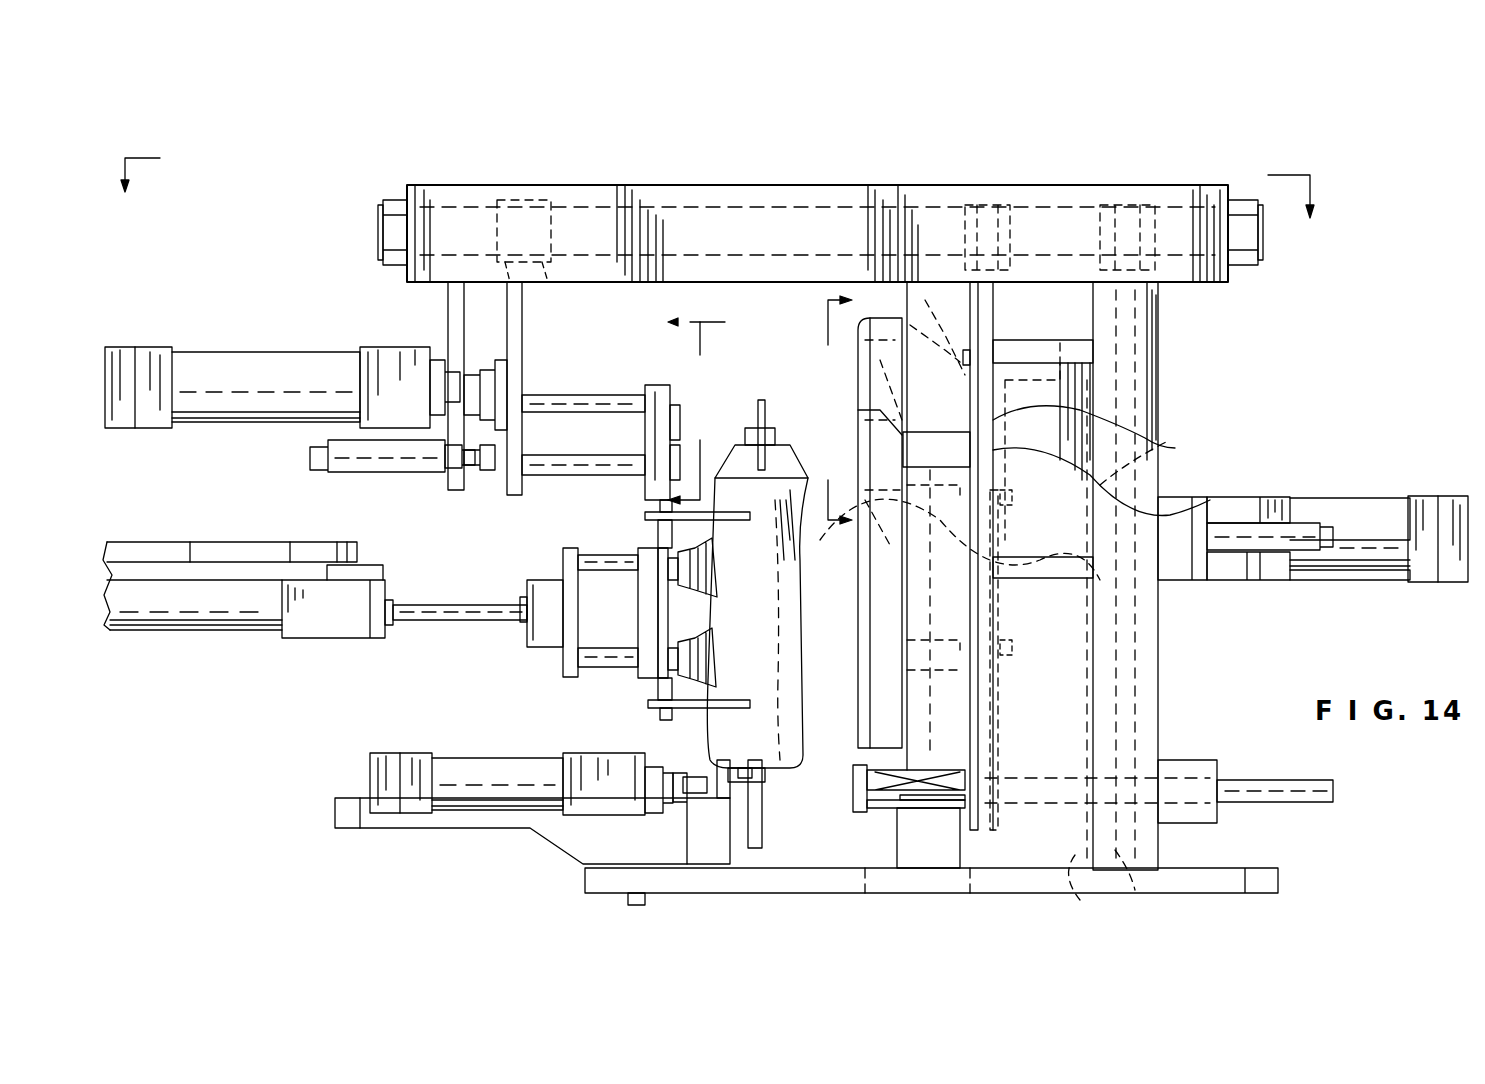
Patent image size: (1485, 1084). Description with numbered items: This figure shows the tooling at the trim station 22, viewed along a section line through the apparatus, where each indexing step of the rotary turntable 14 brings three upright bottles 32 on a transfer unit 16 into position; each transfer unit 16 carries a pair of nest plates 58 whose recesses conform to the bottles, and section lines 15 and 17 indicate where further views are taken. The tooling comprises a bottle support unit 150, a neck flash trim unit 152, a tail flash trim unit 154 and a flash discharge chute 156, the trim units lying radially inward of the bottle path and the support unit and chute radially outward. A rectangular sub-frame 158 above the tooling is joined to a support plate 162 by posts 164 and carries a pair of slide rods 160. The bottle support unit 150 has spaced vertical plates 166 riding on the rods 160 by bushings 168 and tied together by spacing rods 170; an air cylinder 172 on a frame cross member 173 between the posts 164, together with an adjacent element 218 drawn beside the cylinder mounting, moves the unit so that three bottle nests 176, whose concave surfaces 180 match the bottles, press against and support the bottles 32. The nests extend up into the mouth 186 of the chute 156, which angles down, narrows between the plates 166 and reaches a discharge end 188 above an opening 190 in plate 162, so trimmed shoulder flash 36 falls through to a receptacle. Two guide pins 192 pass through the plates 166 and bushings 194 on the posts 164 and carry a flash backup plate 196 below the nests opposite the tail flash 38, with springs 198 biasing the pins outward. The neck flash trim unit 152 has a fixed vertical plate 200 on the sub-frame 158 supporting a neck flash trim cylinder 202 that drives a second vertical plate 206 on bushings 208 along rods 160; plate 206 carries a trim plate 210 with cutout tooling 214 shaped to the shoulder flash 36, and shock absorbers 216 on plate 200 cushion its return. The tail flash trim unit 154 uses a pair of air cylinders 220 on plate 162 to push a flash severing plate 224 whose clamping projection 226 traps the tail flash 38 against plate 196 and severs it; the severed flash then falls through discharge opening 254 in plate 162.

The rotary turntable 14 is at (155, 542).
The section line 15 is at (645, 416).
The transfer unit 16 is at (368, 686).
The section line 17 is at (716, 207).
The trim station 22 is at (800, 180).
The bottle 32 is at (757, 605).
The shoulder flash 36 is at (768, 400).
The tail flash 38 is at (757, 850).
The nest plate 58 is at (660, 535).
The bottle support unit 150 is at (915, 830).
The neck flash trim unit 152 is at (300, 342).
The tail flash trim unit 154 is at (488, 815).
The flash discharge chute 156 is at (930, 320).
The sub-frame 158 is at (438, 185).
The slide rod 160 is at (850, 215).
The support plate 162 is at (1278, 888).
The post 164 is at (1160, 385).
The vertical plate 166 is at (1175, 448).
The bushing 168 is at (1020, 220).
The spacing rod 170 is at (1065, 335).
The air cylinder 172 is at (1380, 500).
The frame cross member 173 is at (1172, 590).
The bottle nest 176 is at (920, 730).
The nest surface 180 is at (880, 650).
The chute mouth 186 is at (900, 320).
The discharge end 188 is at (1140, 900).
The opening 190 is at (1060, 895).
The guide pin 192 is at (1338, 790).
The bushing 194 is at (1200, 820).
The flash backup plate 196 is at (860, 812).
The spring 198 is at (945, 810).
The fixed vertical plate 200 is at (448, 310).
The neck flash trim cylinder 202 is at (200, 357).
The second vertical plate 206 is at (522, 300).
The bushing 208 is at (560, 235).
The trim plate 210 is at (652, 395).
The cutout tooling 214 is at (682, 430).
The shock absorber 216 is at (360, 475).
The rod block 218 is at (1240, 570).
The air cylinder 220 is at (488, 755).
The flash severing plate 224 is at (718, 812).
The clamping projection 226 is at (752, 778).
The discharge opening 254 is at (712, 870).